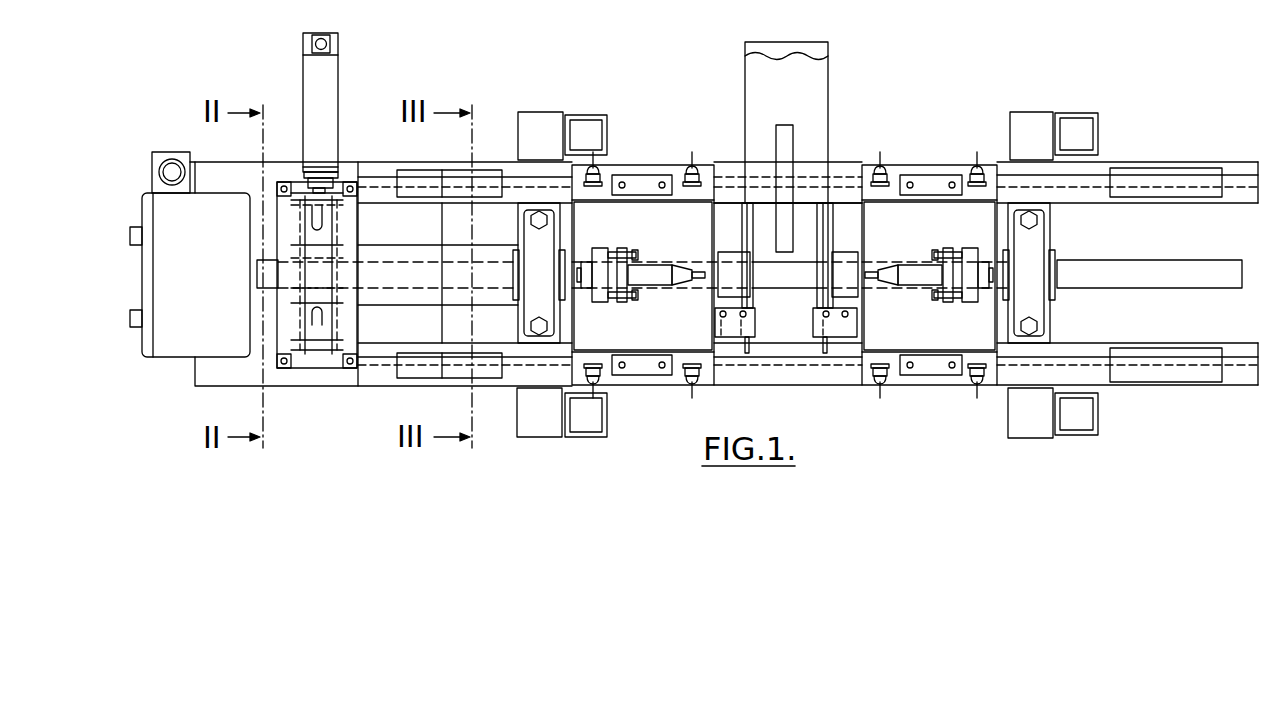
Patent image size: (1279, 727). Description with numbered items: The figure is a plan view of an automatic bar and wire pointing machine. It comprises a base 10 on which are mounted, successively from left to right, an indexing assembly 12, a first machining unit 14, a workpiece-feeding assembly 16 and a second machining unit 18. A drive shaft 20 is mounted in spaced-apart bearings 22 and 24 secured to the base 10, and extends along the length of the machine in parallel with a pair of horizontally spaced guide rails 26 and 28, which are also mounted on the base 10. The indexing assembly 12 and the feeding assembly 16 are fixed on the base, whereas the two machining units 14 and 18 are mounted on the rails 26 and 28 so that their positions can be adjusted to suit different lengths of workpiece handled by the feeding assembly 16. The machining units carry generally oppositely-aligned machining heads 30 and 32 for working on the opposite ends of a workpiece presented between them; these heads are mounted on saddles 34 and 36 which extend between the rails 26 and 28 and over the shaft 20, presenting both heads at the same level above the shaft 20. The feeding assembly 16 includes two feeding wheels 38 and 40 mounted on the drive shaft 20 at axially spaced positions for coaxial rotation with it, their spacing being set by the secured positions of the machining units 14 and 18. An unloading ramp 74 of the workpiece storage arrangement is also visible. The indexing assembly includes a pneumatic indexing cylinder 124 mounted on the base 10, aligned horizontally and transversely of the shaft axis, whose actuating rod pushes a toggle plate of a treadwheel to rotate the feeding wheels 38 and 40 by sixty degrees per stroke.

The base 10 is at (309, 368).
The indexing assembly 12 is at (350, 82).
The first machining unit 14 is at (682, 128).
The workpiece-feeding assembly 16 is at (857, 94).
The second machining unit 18 is at (955, 118).
The drive shaft 20 is at (1170, 268).
The bearing 22 is at (527, 247).
The bearing 24 is at (1042, 252).
The guide rail 26 is at (492, 182).
The guide rail 28 is at (490, 370).
The machining head 30 is at (661, 282).
The machining head 32 is at (917, 290).
The saddle 34 is at (645, 340).
The saddle 36 is at (937, 340).
The feeding wheel 38 is at (745, 229).
The feeding wheel 40 is at (838, 229).
The unloading ramp 74 is at (788, 135).
The pneumatic indexing cylinder 124 is at (313, 73).